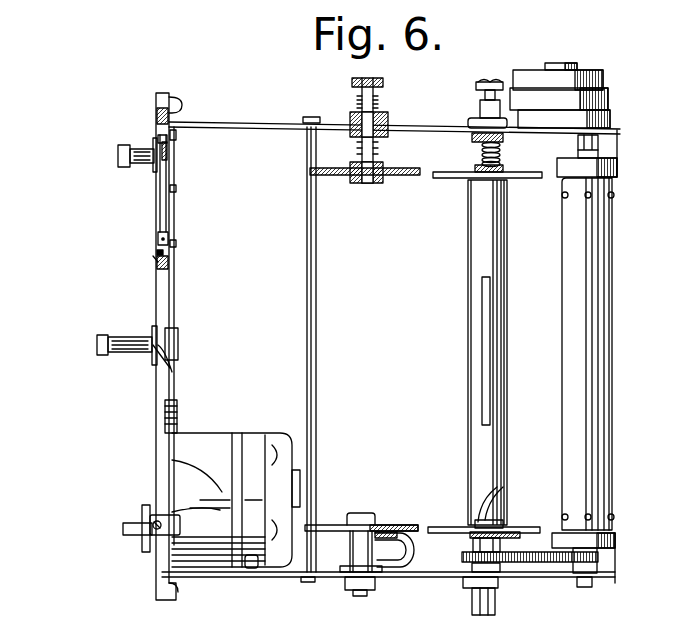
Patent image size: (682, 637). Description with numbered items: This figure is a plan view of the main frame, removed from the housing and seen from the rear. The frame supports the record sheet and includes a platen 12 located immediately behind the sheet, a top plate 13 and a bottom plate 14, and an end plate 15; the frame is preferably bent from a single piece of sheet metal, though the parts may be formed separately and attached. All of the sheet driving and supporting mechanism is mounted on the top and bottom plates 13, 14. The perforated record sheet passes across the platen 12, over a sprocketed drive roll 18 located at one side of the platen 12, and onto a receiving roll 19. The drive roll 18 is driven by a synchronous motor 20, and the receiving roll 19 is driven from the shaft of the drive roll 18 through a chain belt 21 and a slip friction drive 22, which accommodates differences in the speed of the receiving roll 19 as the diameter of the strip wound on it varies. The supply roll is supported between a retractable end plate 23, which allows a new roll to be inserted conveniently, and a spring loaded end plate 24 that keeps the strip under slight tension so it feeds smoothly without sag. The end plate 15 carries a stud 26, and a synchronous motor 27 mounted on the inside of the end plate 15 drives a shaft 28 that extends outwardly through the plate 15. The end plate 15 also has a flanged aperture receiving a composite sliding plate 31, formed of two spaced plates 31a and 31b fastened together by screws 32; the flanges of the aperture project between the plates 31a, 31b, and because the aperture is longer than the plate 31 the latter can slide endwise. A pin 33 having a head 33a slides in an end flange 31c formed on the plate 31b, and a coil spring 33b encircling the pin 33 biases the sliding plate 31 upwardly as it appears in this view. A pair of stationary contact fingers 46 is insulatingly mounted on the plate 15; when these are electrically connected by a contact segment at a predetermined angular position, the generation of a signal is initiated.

The platen 12 is at (407, 288).
The top plate 13 is at (428, 125).
The bottom plate 14 is at (413, 578).
The end plate 15 is at (158, 292).
The sprocketed drive roll 18 is at (598, 365).
The receiving roll 19 is at (470, 438).
The synchronous motor 20 is at (600, 80).
The chain belt 21 is at (535, 562).
The slip friction drive 22 is at (450, 527).
The end plate 23 is at (397, 178).
The end plate 24 is at (407, 523).
The stud 26 is at (138, 148).
The synchronous motor 27 is at (208, 433).
The shaft 28 is at (130, 527).
The composite sliding plate 31 is at (155, 321).
The plate 31a is at (170, 213).
The plate 31b is at (157, 209).
The end flange 31c is at (157, 237).
The screws 32 is at (174, 137).
The pin 33 is at (155, 255).
The head 33a is at (166, 262).
The coil spring 33b is at (153, 258).
The stationary contact fingers 46 is at (157, 367).